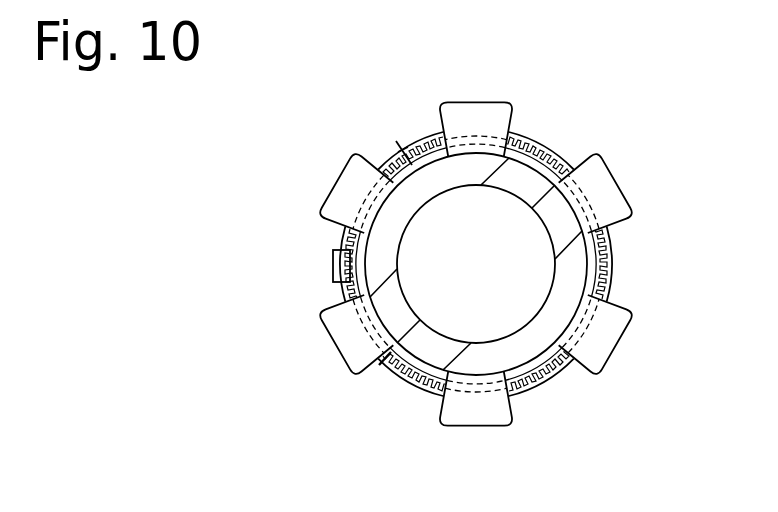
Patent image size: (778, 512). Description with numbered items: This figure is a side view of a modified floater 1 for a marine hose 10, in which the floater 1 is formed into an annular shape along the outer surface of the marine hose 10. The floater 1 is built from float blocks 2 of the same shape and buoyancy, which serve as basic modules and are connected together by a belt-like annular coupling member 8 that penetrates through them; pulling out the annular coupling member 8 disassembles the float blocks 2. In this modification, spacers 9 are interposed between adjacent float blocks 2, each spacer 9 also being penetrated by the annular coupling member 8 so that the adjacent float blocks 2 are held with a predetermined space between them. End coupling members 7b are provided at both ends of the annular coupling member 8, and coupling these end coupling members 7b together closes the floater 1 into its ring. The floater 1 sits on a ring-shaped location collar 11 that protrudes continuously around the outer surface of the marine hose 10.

The floater 1 is at (629, 147).
The float block 2 is at (332, 356).
The end coupling member 7b is at (333, 268).
The annular coupling member 8 is at (528, 128).
The spacer 9 is at (427, 137).
The marine hose 10 is at (400, 148).
The location collar 11 is at (385, 365).